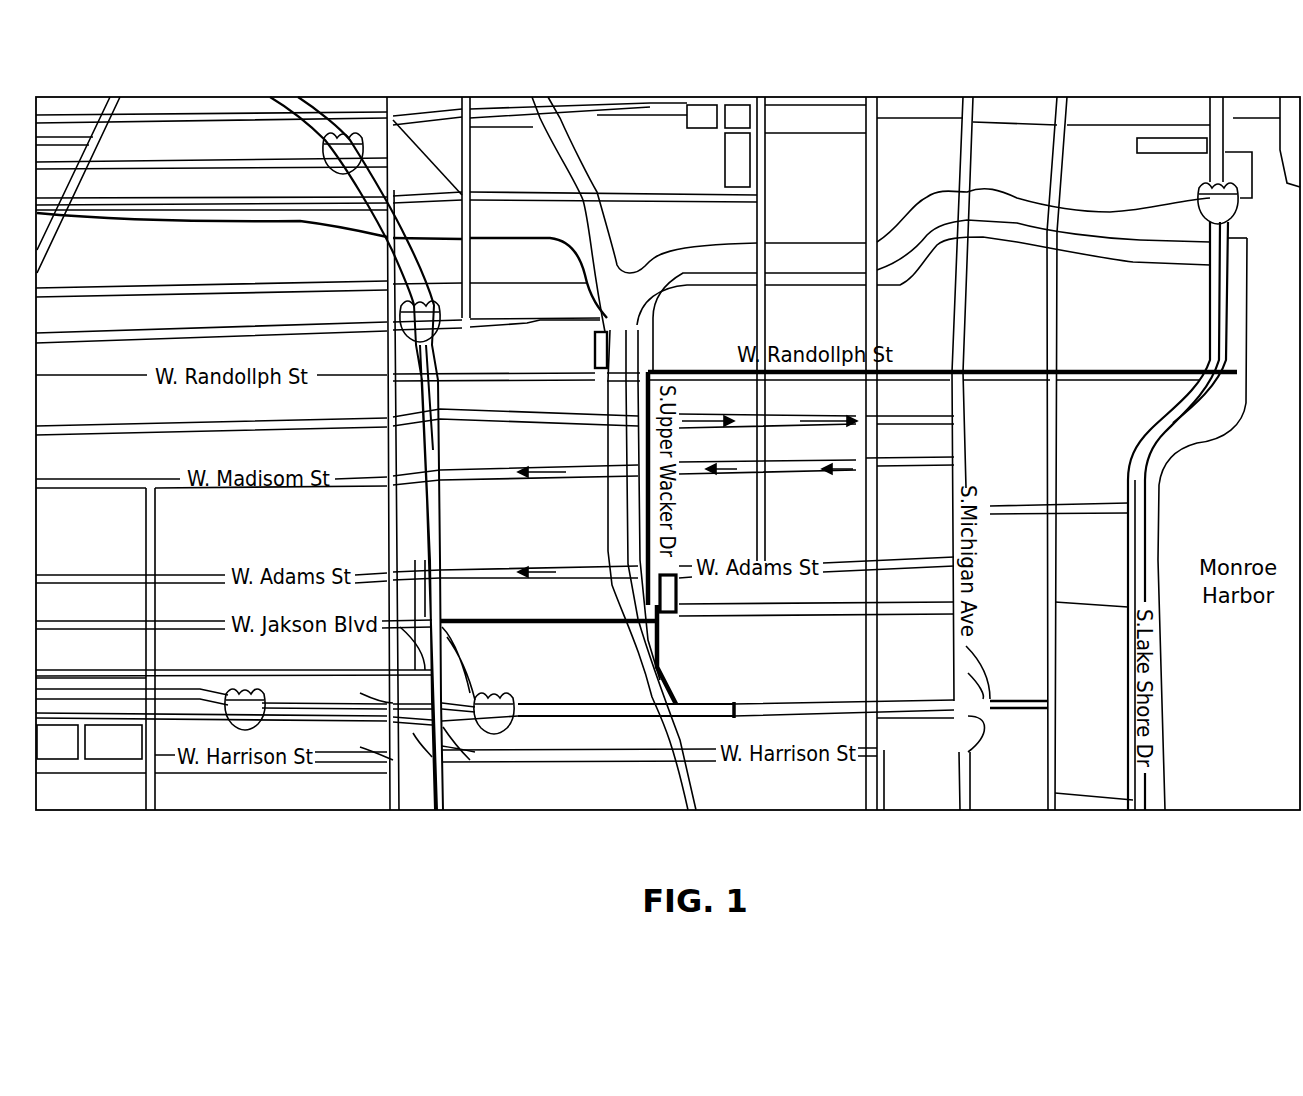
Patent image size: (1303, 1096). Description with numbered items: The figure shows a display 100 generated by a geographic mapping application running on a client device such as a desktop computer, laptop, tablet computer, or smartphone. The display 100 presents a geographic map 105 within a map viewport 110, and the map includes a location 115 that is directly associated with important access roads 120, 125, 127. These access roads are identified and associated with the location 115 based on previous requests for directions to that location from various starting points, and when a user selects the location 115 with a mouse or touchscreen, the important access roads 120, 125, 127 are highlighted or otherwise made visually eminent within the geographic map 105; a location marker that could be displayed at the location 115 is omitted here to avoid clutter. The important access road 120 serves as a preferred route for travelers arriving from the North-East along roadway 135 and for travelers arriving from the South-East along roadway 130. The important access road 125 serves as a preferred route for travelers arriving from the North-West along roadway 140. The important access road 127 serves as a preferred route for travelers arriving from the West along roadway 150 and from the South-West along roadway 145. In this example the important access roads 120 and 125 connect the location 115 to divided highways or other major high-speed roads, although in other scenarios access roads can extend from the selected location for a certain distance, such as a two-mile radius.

The display 100 is at (900, 61).
The geographic map 105 is at (507, 135).
The map viewport 110 is at (635, 97).
The location 115 is at (676, 590).
The important access road 120 is at (1017, 372).
The important access road 125 is at (530, 624).
The important access road 127 is at (652, 712).
The roadway 130 is at (1140, 790).
The roadway 135 is at (1222, 130).
The roadway 140 is at (298, 112).
The roadway 145 is at (441, 808).
The roadway 150 is at (204, 718).